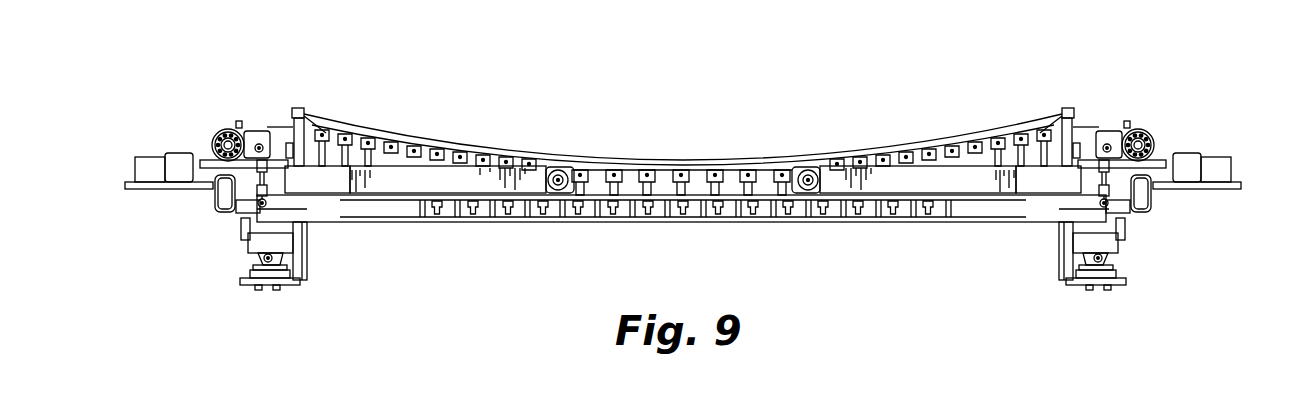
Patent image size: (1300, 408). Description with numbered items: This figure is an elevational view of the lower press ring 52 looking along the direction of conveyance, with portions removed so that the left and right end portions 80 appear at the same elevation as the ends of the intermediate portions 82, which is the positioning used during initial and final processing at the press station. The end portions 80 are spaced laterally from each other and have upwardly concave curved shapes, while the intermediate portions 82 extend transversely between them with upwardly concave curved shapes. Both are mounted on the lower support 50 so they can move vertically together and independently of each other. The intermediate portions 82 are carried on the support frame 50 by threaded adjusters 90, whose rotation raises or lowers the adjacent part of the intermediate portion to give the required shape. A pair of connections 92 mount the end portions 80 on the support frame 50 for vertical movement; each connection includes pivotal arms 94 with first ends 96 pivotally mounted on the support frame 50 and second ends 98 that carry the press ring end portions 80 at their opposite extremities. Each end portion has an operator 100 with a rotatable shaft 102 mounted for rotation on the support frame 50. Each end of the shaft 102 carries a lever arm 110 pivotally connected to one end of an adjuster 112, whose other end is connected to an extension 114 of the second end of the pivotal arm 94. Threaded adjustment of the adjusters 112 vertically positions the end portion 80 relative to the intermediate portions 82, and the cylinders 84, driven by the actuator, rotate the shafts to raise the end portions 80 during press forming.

The lower support 50 is at (219, 215).
The lower press ring 52 is at (1076, 121).
The end portions 80 is at (305, 117).
The intermediate portions 82 is at (684, 158).
The cylinders 84 is at (247, 237).
The adjusters 90 is at (717, 192).
The connections 92 is at (427, 158).
The pivotal arms 94 is at (410, 177).
The first ends 96 is at (540, 178).
The second ends 98 is at (323, 180).
The operators 100 is at (208, 135).
The rotatable shaft 102 is at (227, 140).
The lever arm 110 is at (257, 137).
The adjuster 112 is at (257, 182).
The extension 114 is at (308, 207).